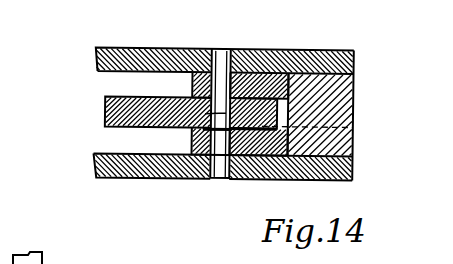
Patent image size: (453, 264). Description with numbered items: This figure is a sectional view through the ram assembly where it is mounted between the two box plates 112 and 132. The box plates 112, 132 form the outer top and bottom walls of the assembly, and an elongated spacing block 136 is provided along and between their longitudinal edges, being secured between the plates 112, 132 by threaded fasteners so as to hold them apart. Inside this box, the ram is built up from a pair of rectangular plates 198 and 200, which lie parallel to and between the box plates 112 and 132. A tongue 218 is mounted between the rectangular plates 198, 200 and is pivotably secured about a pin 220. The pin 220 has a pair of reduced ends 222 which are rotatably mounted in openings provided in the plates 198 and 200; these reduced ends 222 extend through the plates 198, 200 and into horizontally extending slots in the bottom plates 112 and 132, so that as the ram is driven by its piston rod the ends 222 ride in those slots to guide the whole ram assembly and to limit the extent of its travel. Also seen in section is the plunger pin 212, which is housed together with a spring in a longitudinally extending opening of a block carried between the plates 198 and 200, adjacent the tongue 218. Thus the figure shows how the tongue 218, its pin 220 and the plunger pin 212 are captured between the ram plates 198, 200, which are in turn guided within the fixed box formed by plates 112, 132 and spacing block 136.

The box plate 112 is at (129, 50).
The box plate 132 is at (135, 171).
The spacing block 136 is at (349, 91).
The rectangular plate 198 is at (262, 80).
The rectangular plate 200 is at (262, 143).
The plunger pin 212 is at (353, 127).
The tongue 218 is at (105, 113).
The pin 220 is at (187, 127).
The reduced ends 222 is at (216, 50).